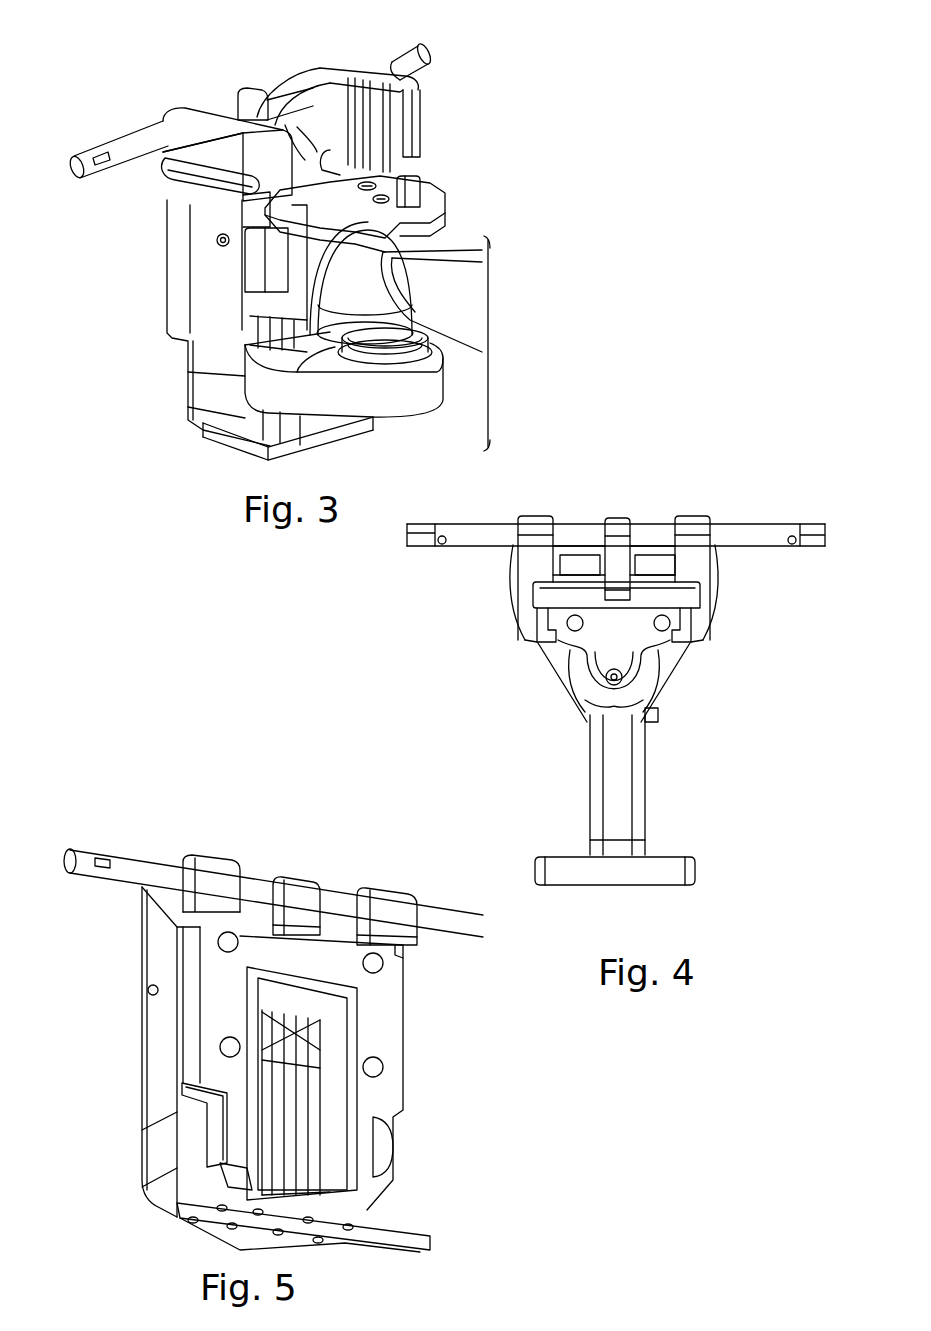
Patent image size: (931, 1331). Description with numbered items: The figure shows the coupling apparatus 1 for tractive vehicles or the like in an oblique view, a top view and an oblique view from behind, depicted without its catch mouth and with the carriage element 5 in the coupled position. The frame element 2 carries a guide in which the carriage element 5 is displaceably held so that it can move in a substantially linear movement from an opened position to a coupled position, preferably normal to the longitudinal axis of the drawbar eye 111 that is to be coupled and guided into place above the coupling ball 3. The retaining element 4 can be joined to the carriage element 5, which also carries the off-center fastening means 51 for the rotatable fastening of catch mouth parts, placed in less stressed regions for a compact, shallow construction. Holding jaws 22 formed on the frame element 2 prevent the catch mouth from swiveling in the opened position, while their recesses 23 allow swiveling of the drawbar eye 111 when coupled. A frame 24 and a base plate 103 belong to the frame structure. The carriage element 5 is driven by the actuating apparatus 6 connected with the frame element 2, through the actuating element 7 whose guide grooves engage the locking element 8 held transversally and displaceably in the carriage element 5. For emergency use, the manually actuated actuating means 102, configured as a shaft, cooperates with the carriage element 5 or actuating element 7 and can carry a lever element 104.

In FIG. 3, the coupling apparatus 1 is at (118, 413).
In FIG. 4, the coupling apparatus 1 is at (676, 478).
In FIG. 5, the coupling apparatus 1 is at (115, 1207).
In FIG. 3, the frame element 2 is at (225, 353).
In FIG. 4, the frame element 2 is at (536, 552).
In FIG. 5, the frame element 2 is at (382, 1020).
In FIG. 3, the coupling ball 3 is at (377, 342).
In FIG. 3, the retaining element 4 is at (382, 227).
In FIG. 4, the retaining element 4 is at (620, 662).
In FIG. 3, the carriage element 5 is at (330, 185).
In FIG. 4, the carriage element 5 is at (655, 597).
In FIG. 5, the actuating apparatus 6 is at (293, 1117).
In FIG. 3, the actuating element 7 is at (338, 147).
In FIG. 3, the locking element 8 is at (262, 252).
In FIG. 3, the holding jaws 22 is at (273, 147).
In FIG. 4, the holding jaws 22 is at (533, 627).
In FIG. 3, the recesses 23 is at (250, 210).
In FIG. 3, the frame 24 is at (355, 160).
In FIG. 5, the frame 24 is at (387, 962).
In FIG. 3, the off-center fastening means 51 is at (378, 195).
In FIG. 3, the manually actuated actuating means 102 is at (97, 148).
In FIG. 4, the manually actuated actuating means 102 is at (780, 537).
In FIG. 5, the manually actuated actuating means 102 is at (92, 856).
In FIG. 3, the base plate 103 is at (238, 442).
In FIG. 5, the base plate 103 is at (322, 1229).
In FIG. 3, the lever element 104 is at (262, 100).
In FIG. 4, the lever element 104 is at (620, 570).
In FIG. 5, the lever element 104 is at (303, 898).
In FIG. 3, the drawbar eye 111 is at (465, 305).
In FIG. 4, the drawbar eye 111 is at (620, 803).